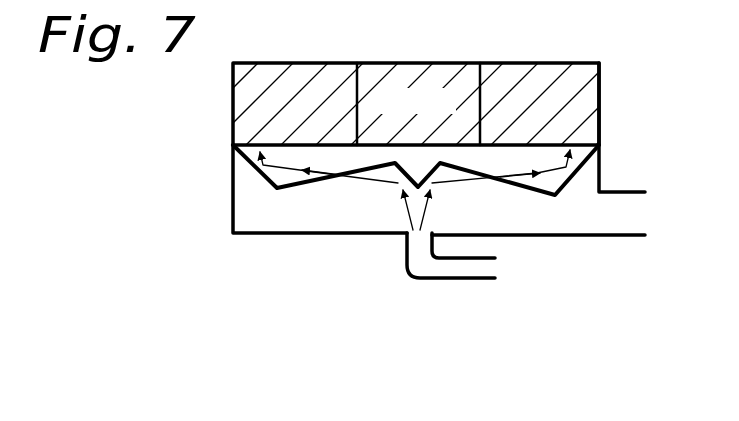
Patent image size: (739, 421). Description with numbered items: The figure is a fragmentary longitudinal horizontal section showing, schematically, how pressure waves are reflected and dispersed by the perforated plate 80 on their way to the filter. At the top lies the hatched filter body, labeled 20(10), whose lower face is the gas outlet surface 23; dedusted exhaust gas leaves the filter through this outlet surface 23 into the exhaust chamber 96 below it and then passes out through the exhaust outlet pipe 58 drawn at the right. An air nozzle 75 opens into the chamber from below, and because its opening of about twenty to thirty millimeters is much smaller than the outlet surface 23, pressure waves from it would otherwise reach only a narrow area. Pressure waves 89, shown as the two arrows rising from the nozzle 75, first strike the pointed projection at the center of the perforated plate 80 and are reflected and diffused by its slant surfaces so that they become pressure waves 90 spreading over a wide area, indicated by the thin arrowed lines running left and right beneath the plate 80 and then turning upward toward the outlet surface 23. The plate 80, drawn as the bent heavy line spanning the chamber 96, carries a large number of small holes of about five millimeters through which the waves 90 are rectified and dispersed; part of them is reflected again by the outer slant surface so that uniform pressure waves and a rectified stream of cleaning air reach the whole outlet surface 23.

The heat generating component 20 is at (427, 104).
The housing 10 is at (427, 104).
The gas outlet surface 23 is at (538, 145).
The exhaust outlet pipe 58 is at (595, 212).
The air nozzle 75 is at (408, 273).
The perforated plate 80 is at (308, 190).
The pressure waves 89 is at (425, 212).
The pressure waves 90 is at (387, 182).
The exhaust chamber 96 is at (265, 208).